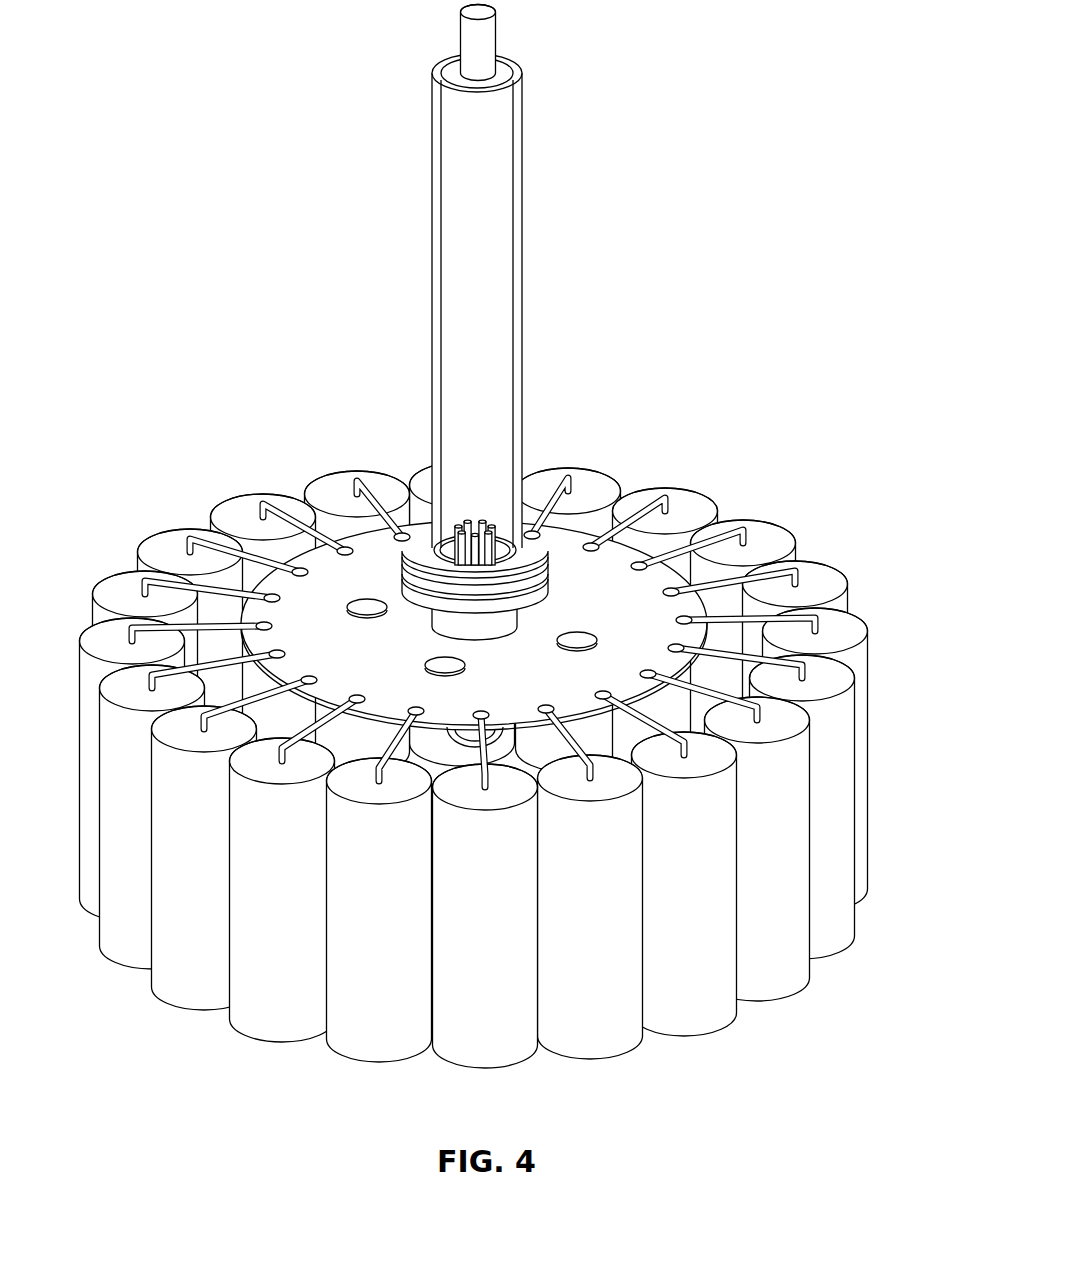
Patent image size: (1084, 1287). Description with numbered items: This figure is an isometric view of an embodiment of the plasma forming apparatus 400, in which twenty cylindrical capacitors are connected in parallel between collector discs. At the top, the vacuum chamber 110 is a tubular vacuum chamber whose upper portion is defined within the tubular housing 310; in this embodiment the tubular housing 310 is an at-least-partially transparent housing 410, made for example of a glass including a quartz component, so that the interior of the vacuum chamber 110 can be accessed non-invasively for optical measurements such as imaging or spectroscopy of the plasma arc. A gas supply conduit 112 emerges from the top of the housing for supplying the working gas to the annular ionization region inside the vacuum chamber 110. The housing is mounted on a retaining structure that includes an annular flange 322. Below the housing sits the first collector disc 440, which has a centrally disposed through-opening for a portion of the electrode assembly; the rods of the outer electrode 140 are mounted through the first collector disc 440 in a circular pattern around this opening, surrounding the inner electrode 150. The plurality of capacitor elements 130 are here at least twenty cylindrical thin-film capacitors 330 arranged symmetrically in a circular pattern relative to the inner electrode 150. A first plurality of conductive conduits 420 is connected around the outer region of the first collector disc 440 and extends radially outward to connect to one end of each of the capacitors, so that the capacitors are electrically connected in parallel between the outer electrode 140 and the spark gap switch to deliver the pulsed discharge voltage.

The plasma forming apparatus 400 is at (117, 165).
The gas supply conduit 112 is at (487, 47).
The tubular housing 310 is at (582, 301).
The at-least-partially transparent housing 410 is at (515, 145).
The vacuum chamber 110 is at (582, 301).
The inner electrode 150 is at (470, 533).
The outer electrode 140 is at (461, 528).
The annular flange 322 is at (540, 557).
The first collector disc 440 is at (300, 603).
The capacitor elements 130 is at (487, 614).
The cylindrical thin-film capacitors 330 is at (833, 622).
The first plurality of conductive conduits 420 is at (522, 537).